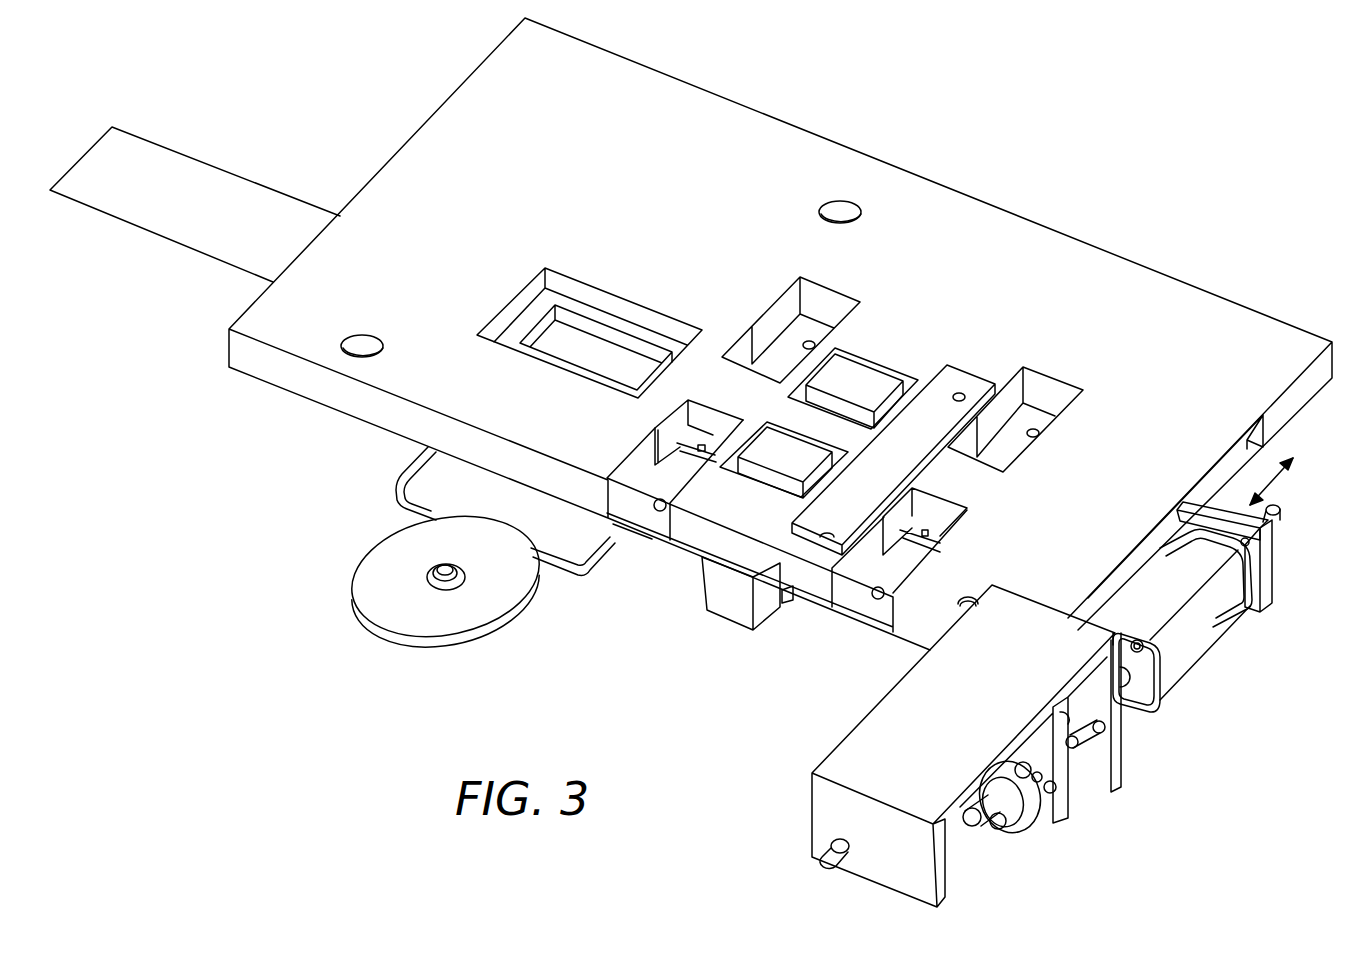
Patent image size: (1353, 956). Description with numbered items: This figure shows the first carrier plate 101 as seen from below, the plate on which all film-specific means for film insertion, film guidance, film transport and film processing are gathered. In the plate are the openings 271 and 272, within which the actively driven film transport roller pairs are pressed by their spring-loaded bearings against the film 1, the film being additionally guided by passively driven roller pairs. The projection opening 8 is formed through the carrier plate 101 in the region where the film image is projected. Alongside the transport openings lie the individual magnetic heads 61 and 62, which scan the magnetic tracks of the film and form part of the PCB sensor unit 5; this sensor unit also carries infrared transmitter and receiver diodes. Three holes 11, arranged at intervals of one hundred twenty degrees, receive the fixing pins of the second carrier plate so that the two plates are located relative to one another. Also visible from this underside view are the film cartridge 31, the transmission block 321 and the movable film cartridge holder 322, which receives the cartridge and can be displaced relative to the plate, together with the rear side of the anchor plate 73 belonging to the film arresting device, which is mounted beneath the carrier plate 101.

The first carrier plate 101 is at (1153, 295).
The holes 11 is at (355, 347).
The projection opening 8 is at (603, 320).
The openings for receiving the second active drive roller pair 272 is at (831, 303).
The openings for receiving the first active drive roller pair 271 is at (1033, 418).
The magnetic head 61 is at (860, 392).
The magnetic head 62 is at (790, 460).
The PCB sensor unit 5 is at (943, 402).
The film 1 is at (665, 463).
The anchor plate 73 is at (512, 583).
The film cartridge 31 is at (1198, 648).
The transmission block 321 is at (1267, 593).
The movable film cartridge holder 322 is at (1117, 743).